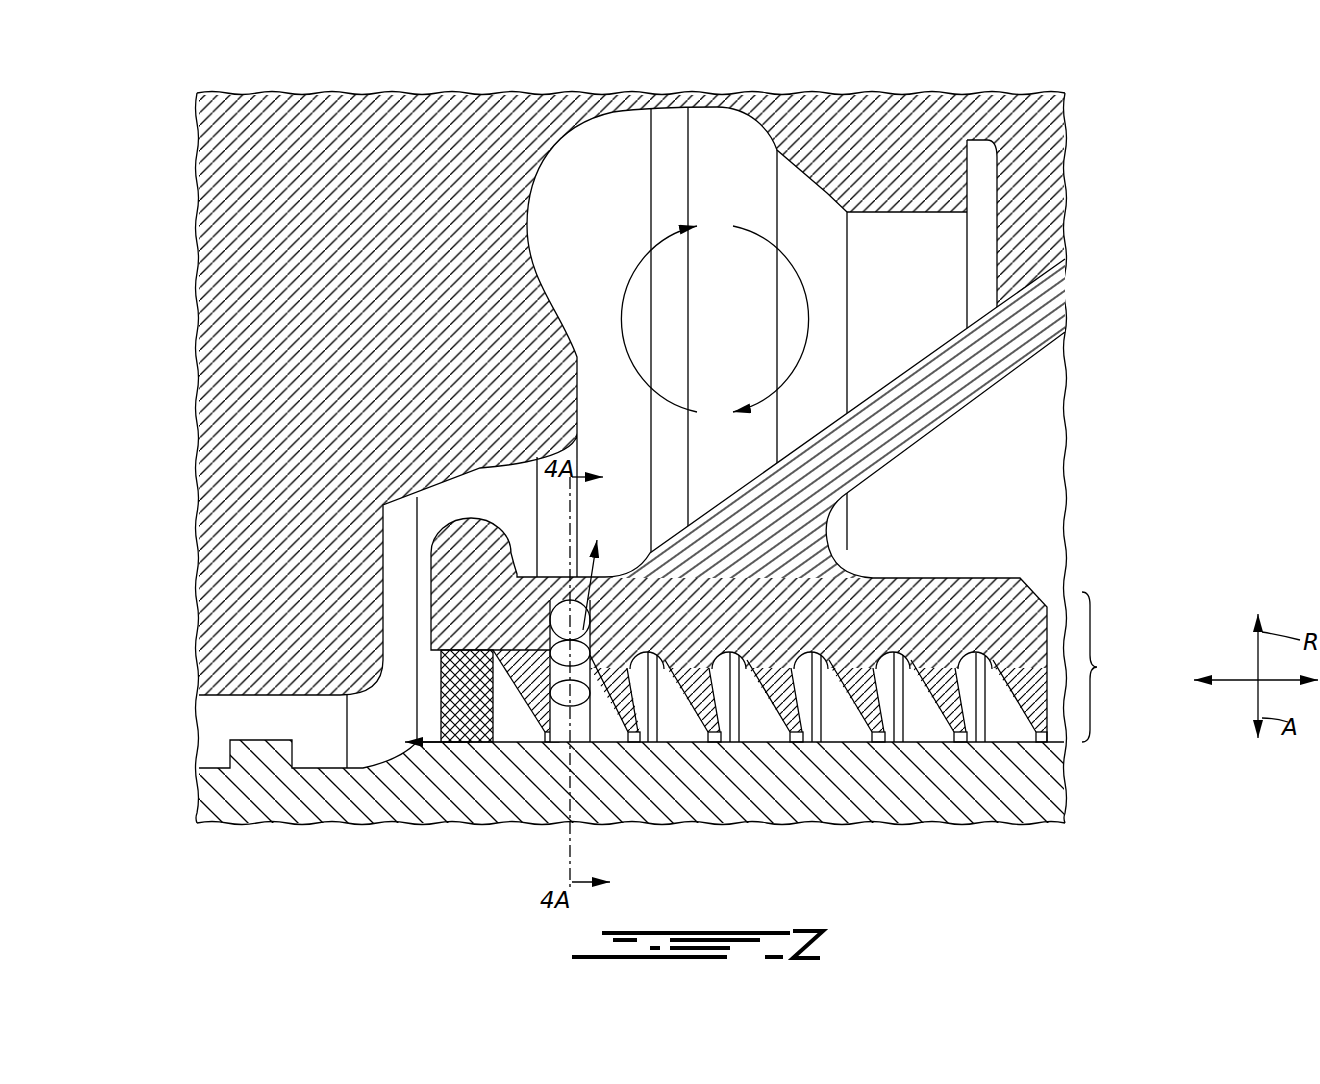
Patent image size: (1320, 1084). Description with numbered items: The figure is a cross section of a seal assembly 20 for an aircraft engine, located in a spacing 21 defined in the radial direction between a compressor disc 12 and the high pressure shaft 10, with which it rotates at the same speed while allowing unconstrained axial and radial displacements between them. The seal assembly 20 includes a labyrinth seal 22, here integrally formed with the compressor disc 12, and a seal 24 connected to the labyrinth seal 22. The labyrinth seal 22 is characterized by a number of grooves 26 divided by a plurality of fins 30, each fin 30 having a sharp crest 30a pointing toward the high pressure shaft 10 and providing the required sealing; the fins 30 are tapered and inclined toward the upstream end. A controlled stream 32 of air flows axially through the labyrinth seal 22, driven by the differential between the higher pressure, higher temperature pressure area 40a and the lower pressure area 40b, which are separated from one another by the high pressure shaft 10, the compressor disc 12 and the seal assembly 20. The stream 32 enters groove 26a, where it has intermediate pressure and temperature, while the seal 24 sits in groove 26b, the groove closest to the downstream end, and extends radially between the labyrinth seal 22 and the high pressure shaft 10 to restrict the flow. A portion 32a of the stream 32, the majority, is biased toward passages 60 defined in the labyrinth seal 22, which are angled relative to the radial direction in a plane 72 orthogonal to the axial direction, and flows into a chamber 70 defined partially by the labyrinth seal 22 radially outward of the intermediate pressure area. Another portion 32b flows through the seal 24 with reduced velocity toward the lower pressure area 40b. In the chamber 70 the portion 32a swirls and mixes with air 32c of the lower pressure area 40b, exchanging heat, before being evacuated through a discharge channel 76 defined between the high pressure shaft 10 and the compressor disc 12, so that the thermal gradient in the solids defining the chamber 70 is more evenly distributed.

The high pressure shaft 10 is at (889, 800).
The compressor disc 12 is at (877, 130).
The seal assembly 20 is at (1112, 185).
The spacing 21 is at (1105, 667).
The labyrinth seal 22 is at (927, 603).
The seal 24 is at (457, 703).
The grooves 26 is at (1015, 747).
The groove 26a is at (603, 727).
The groove 26b is at (507, 712).
The fins 30 is at (900, 747).
The sharp crest 30a is at (955, 747).
The stream of air 32 is at (757, 737).
The portion of the stream of air 32a is at (620, 318).
The portion of the stream of air 32b is at (463, 745).
The air of the lower pressure area 32c is at (812, 306).
The pressure area 40a is at (988, 477).
The pressure area 40b is at (287, 722).
The passages 60 is at (560, 622).
The chamber 70 is at (716, 175).
The plane 72 is at (578, 847).
The discharge channel 76 is at (403, 620).